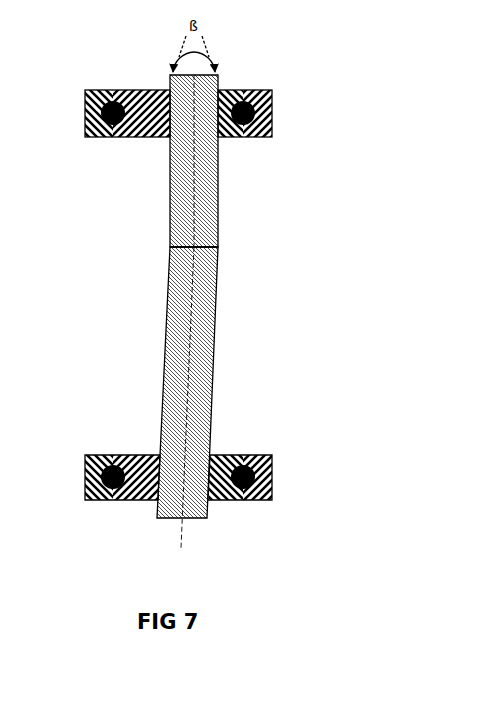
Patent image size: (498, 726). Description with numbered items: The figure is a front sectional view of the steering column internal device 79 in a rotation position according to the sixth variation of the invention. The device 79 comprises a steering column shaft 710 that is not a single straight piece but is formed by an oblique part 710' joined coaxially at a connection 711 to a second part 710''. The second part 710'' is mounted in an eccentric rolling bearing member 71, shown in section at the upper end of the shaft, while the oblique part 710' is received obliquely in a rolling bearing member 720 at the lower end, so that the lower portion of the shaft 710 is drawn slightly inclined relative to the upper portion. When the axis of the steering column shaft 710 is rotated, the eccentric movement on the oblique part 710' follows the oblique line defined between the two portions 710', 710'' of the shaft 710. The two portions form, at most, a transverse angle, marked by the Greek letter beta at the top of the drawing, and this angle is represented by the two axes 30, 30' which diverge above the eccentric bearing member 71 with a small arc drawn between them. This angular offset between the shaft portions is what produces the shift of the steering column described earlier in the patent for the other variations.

The axis 30 is at (148, 35).
The axis 30' is at (242, 35).
The eccentric rolling bearing member 71 is at (275, 112).
The steering column internal device 79 is at (127, 248).
The steering column shaft 710 is at (197, 311).
The second part 710'' is at (243, 161).
The oblique part 710' is at (232, 382).
The connection 711 is at (167, 250).
The rolling bearing member 720 is at (275, 475).